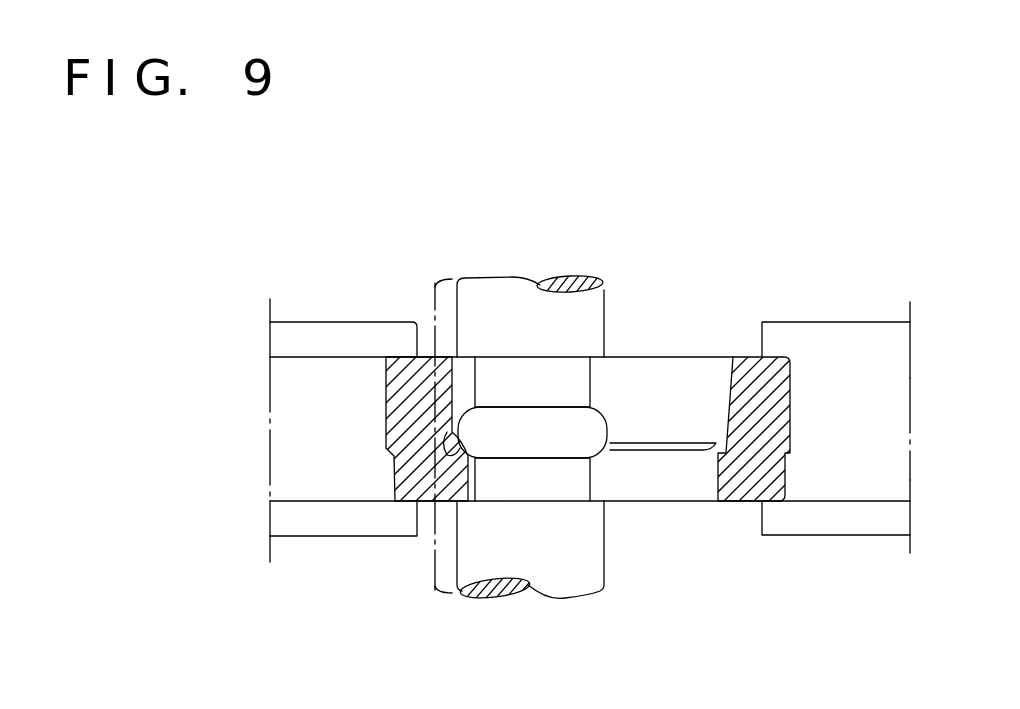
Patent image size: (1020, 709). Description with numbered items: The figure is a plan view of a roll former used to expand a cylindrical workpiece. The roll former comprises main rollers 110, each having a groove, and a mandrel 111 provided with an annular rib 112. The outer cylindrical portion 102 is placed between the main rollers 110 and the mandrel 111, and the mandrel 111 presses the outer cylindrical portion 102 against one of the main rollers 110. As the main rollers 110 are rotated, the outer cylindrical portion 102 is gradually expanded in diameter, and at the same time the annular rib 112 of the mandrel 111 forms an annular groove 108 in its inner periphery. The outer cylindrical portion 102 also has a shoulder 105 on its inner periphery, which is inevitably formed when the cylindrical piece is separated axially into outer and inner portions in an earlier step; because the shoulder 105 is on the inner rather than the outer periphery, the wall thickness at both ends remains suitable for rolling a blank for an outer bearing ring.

The outer cylindrical portion 102 is at (747, 368).
The shoulder 105 is at (706, 450).
The annular groove 108 is at (452, 462).
The main rollers 110 is at (327, 535).
The mandrel 111 is at (490, 293).
The annular rib 112 is at (596, 418).